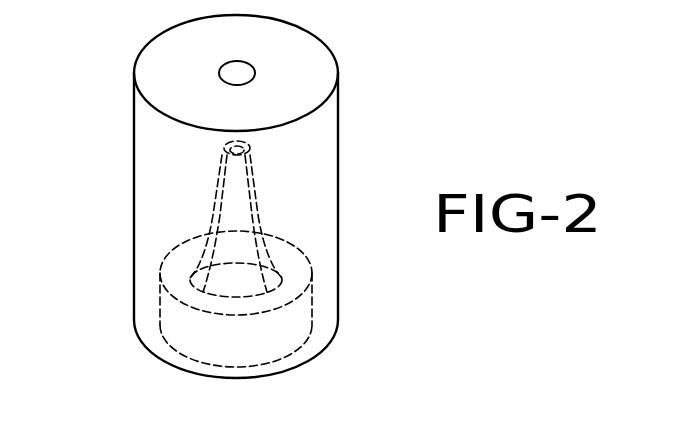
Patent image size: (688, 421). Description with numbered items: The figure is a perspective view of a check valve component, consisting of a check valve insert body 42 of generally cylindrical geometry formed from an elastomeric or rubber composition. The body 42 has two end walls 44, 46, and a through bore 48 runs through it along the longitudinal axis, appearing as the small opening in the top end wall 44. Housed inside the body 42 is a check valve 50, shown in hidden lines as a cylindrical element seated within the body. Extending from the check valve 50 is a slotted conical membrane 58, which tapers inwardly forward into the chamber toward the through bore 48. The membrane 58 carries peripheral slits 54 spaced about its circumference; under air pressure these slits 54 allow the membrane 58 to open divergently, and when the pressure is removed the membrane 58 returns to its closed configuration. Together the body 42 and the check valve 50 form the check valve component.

The check valve insert body 42 is at (345, 134).
The end wall 44 is at (315, 68).
The end wall 46 is at (305, 364).
The through bore 48 is at (226, 82).
The check valve 50 is at (160, 322).
The peripheral slits 54 is at (215, 250).
The slotted conical membrane 58 is at (233, 212).